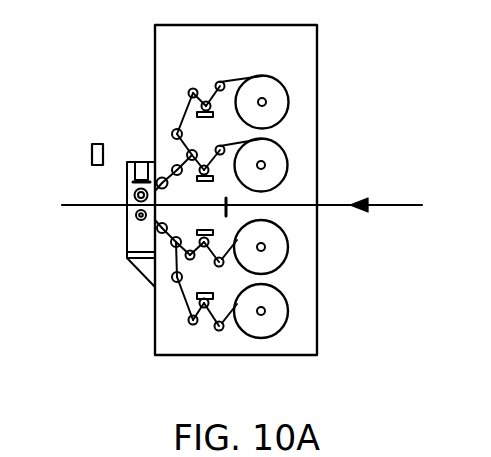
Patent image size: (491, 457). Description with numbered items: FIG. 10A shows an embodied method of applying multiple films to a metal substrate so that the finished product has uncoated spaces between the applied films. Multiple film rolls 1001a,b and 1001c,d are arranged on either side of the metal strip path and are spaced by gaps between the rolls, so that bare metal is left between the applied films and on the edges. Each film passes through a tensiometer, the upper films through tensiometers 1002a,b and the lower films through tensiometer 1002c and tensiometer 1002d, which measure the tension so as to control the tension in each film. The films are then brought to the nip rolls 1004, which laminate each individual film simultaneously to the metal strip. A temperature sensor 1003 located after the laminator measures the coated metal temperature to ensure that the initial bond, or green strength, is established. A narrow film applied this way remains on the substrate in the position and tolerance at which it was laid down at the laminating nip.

The film rolls 1001a,b is at (290, 152).
The film rolls 1001c,d is at (290, 297).
The tensiometer 1002a,b is at (205, 150).
The tensiometer 1002c is at (195, 232).
The tensiometer 1002d is at (192, 297).
The temperature sensor 1003 is at (92, 153).
The nip rolls 1004 is at (128, 197).